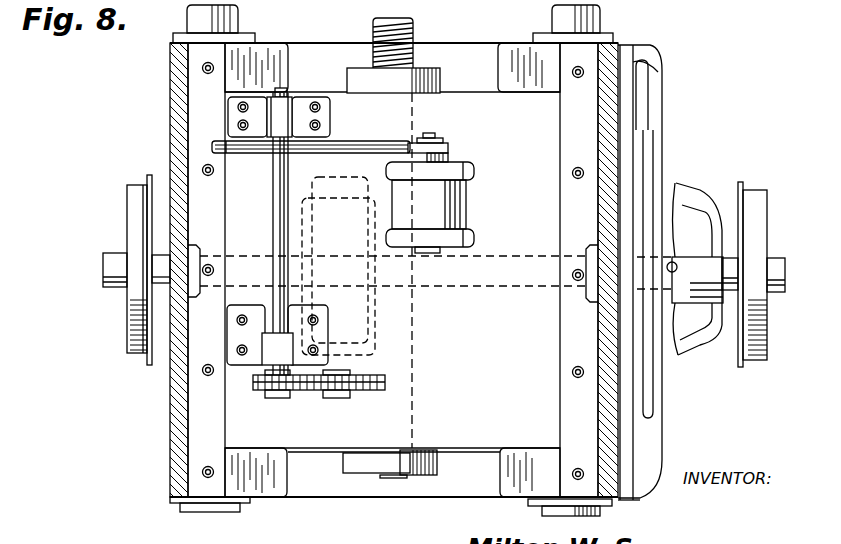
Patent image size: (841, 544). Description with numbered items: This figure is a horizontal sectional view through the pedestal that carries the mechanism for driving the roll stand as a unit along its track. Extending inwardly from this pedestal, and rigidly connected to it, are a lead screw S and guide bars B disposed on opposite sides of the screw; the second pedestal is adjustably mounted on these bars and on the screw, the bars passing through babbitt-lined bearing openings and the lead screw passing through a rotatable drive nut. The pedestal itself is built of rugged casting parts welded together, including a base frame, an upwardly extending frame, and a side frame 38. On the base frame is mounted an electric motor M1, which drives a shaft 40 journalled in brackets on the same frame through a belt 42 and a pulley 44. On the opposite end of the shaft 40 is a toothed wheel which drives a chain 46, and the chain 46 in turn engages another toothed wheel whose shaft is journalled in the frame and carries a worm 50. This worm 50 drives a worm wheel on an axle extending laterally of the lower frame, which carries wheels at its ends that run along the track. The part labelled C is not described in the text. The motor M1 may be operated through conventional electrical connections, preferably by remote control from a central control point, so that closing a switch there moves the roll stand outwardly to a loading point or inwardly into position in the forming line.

The guide bars B is at (238, 24).
The lead screw S is at (416, 35).
The belt 42 is at (392, 148).
The pulley 44 is at (251, 156).
The shaft 40 is at (278, 200).
The electric motor M1 is at (432, 203).
The side frame 38 is at (683, 208).
The worm 50 is at (357, 325).
The chain 46 is at (303, 392).
The coupling C is at (393, 478).